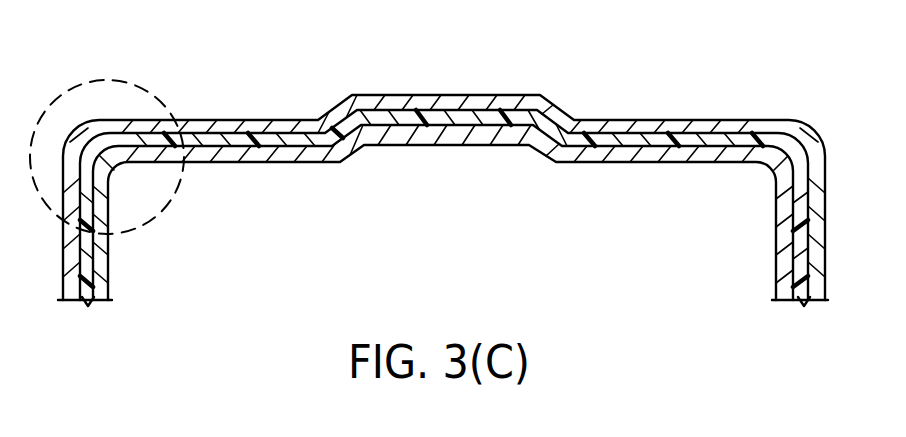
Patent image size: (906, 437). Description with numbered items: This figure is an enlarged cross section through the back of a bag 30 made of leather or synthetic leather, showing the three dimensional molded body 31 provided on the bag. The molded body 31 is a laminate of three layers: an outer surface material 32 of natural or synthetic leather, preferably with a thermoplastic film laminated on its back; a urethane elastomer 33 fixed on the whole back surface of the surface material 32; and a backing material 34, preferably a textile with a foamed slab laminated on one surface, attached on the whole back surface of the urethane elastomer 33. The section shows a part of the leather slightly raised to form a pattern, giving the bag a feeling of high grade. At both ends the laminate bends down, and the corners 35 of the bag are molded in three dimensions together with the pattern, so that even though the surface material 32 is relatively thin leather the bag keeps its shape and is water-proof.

The bag 30 is at (429, 154).
The three dimensional molded body 31 is at (471, 94).
The surface material 32 is at (444, 163).
The urethane elastomer 33 is at (587, 140).
The backing material 34 is at (472, 146).
The corners 35 is at (138, 85).